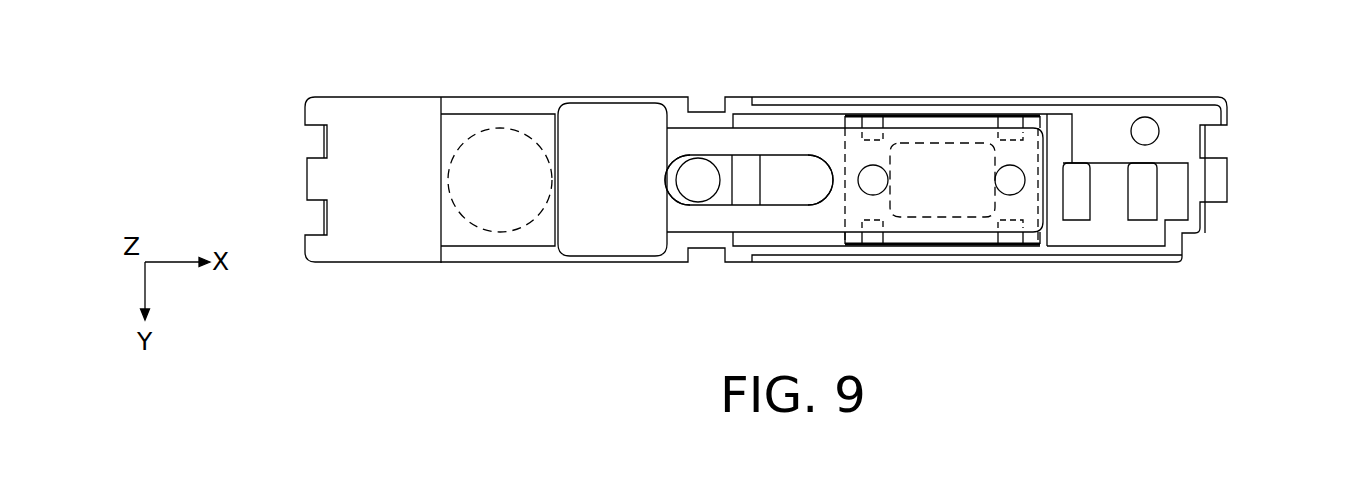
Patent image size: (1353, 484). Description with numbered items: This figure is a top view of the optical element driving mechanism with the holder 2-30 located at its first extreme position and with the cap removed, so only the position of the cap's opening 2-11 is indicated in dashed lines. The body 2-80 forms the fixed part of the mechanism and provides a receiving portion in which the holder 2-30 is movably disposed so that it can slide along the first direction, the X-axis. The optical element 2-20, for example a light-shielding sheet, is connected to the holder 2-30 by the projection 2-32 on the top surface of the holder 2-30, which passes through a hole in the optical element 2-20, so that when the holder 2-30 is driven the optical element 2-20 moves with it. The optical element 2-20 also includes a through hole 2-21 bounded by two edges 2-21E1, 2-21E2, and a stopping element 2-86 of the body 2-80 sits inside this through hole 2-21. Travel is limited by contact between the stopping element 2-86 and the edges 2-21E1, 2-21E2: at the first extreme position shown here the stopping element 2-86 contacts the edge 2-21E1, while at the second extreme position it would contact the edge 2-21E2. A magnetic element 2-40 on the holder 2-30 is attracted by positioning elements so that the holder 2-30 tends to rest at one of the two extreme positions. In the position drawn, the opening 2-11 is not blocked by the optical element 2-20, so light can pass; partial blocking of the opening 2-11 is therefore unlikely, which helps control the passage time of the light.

The body 2-80 is at (1176, 96).
The opening 2-11 is at (515, 130).
The optical element 2-20 is at (773, 143).
The through hole 2-21 is at (817, 173).
The edge of the through hole 2-21E1 is at (665, 179).
The edge of the through hole 2-21E2 is at (835, 182).
The stopping element 2-86 is at (698, 188).
The holder 2-30 is at (987, 120).
The projection 2-32 is at (873, 180).
The magnetic element 2-40 is at (932, 177).